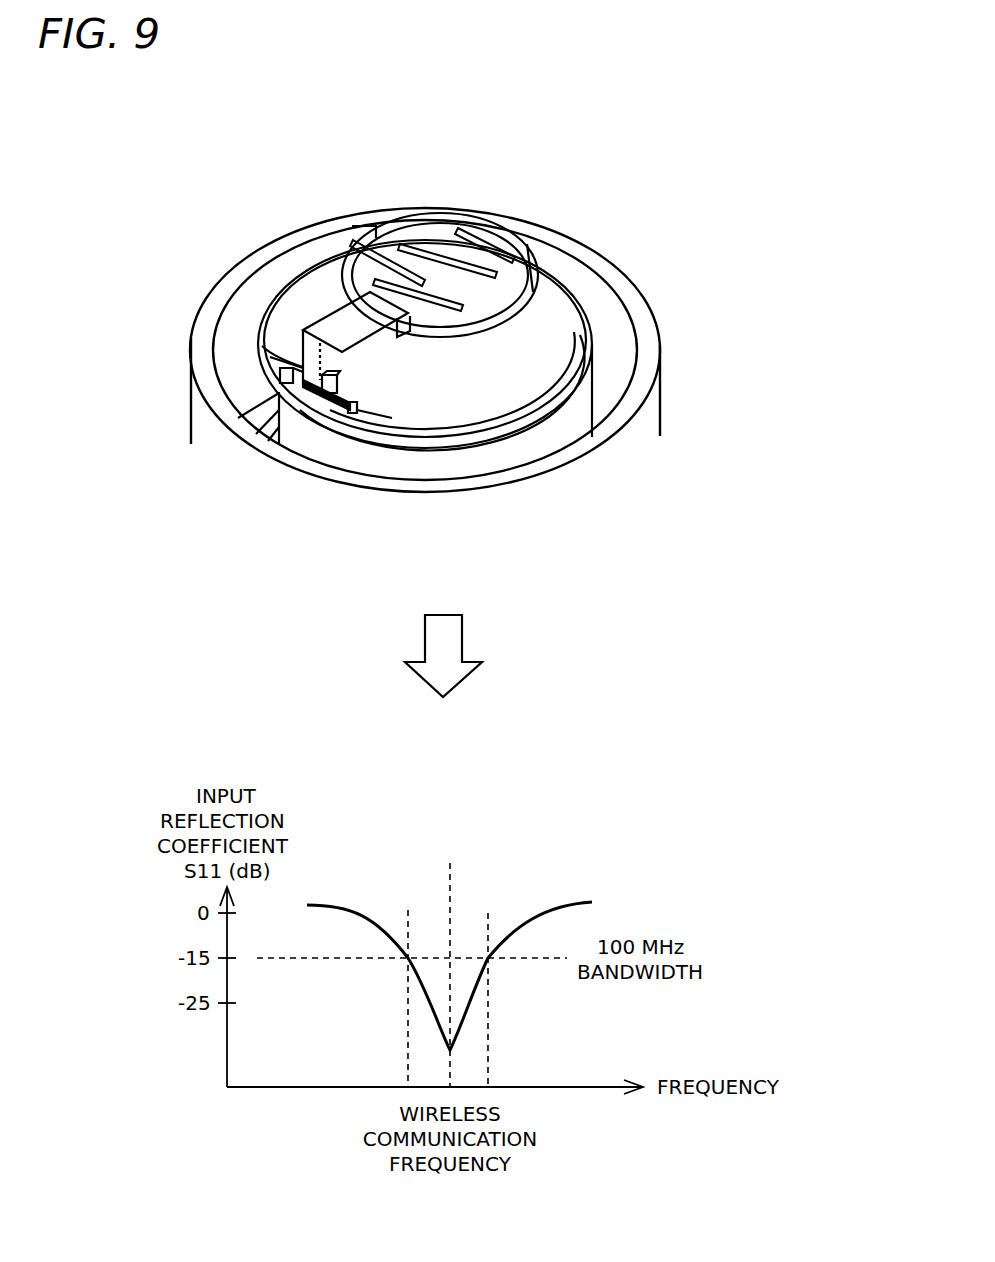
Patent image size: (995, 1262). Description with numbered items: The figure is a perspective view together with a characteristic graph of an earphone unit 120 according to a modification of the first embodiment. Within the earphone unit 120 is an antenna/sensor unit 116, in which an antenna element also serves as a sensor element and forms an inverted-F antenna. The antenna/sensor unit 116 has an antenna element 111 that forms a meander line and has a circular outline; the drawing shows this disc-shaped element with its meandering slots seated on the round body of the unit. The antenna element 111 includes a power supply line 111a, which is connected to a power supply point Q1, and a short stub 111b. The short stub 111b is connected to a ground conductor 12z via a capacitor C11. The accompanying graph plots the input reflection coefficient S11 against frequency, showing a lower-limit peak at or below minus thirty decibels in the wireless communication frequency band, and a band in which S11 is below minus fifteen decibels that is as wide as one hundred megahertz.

The earphone unit 120 is at (178, 258).
The antenna element 111 is at (437, 232).
The antenna/sensor unit 116 is at (526, 236).
The ground conductor 12z is at (582, 345).
The power supply line 111a is at (300, 372).
The power supply point Q1 is at (290, 381).
The short stub 111b is at (317, 390).
The capacitor C11 is at (352, 403).